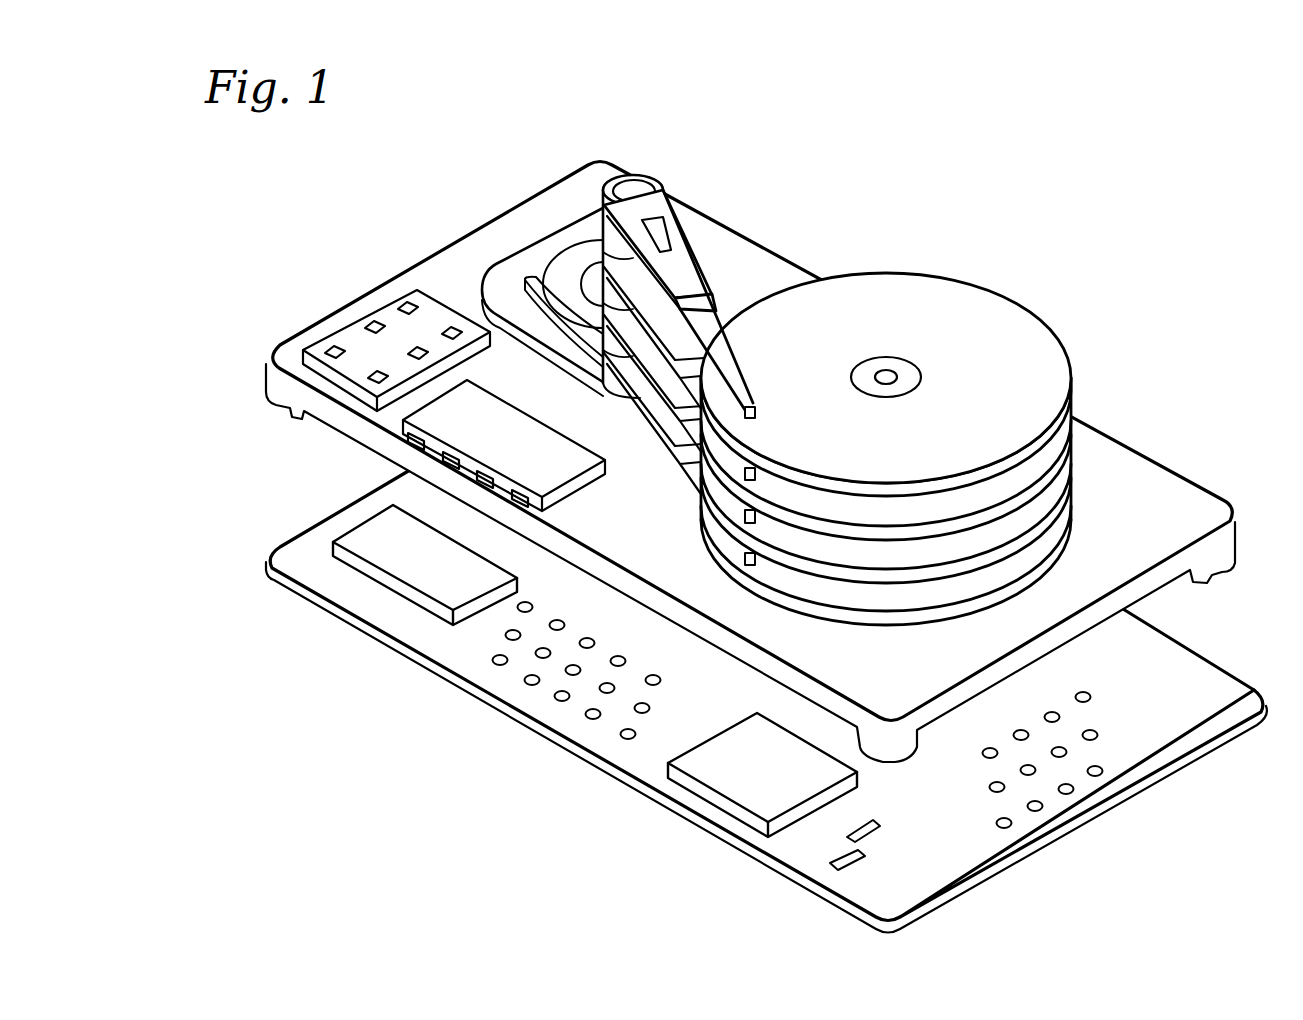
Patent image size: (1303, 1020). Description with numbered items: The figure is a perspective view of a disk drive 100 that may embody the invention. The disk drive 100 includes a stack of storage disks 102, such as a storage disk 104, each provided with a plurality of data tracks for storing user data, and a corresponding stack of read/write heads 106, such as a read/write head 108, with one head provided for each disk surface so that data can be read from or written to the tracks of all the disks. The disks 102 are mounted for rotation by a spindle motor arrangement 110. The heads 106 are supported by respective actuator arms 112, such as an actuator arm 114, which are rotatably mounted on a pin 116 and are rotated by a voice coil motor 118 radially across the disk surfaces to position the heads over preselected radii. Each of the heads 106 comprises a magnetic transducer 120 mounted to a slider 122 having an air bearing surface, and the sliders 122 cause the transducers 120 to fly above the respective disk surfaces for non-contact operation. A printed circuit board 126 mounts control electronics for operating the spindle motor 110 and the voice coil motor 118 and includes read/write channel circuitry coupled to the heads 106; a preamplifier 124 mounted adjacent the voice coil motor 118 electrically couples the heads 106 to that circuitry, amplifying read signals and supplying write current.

The disk drive 100 is at (450, 831).
The stack of storage disks 102 is at (969, 418).
The storage disk 104 is at (949, 353).
The stack of read/write heads 106 is at (750, 454).
The read/write head 108 is at (779, 439).
The spindle motor arrangement 110 is at (888, 360).
The actuator arms 112 is at (674, 309).
The actuator arm 114 is at (683, 263).
The pin 116 is at (637, 191).
The voice coil motor 118 is at (553, 265).
The magnetic transducer 120 is at (745, 426).
The slider 122 is at (757, 411).
The preamplifier 124 is at (368, 316).
The printed circuit board 126 is at (963, 858).